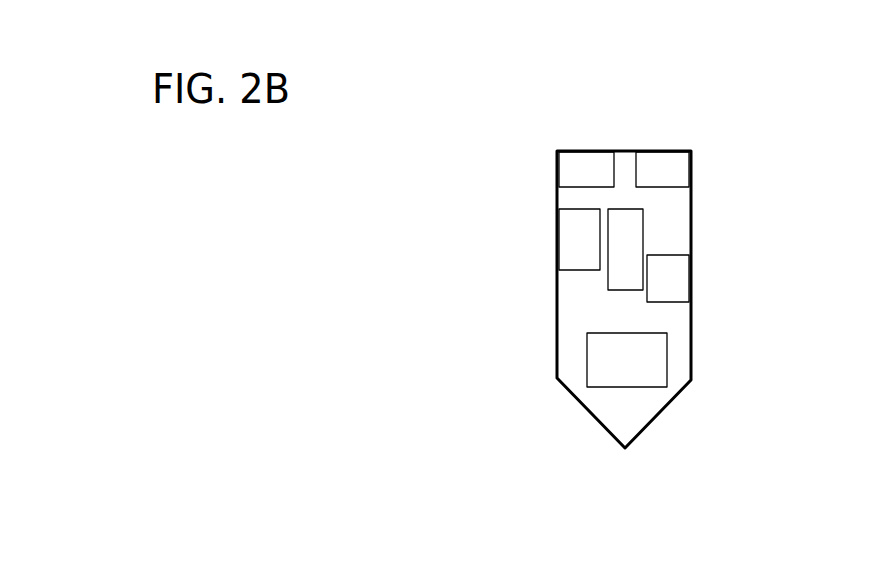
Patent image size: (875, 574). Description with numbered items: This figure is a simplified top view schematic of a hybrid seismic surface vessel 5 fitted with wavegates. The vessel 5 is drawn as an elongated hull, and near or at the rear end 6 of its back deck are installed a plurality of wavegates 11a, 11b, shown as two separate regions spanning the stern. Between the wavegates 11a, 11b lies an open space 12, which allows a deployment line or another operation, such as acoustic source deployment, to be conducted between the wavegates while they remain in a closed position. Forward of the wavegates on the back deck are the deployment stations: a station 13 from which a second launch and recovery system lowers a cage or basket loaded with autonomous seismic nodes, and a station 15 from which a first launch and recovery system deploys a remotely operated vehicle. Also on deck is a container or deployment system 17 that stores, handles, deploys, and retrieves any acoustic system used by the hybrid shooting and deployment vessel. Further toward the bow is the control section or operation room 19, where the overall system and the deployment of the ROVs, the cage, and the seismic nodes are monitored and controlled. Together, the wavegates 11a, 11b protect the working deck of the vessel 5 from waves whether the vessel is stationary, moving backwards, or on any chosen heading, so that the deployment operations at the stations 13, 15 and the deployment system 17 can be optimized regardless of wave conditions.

The surface vessel 5 is at (682, 347).
The rear end 6 is at (643, 152).
The wavegate 11a is at (597, 167).
The wavegate 11b is at (658, 168).
The open space 12 is at (626, 167).
The station 13 is at (573, 235).
The station 15 is at (676, 280).
The deployment system 17 is at (623, 235).
The control section 19 is at (600, 353).